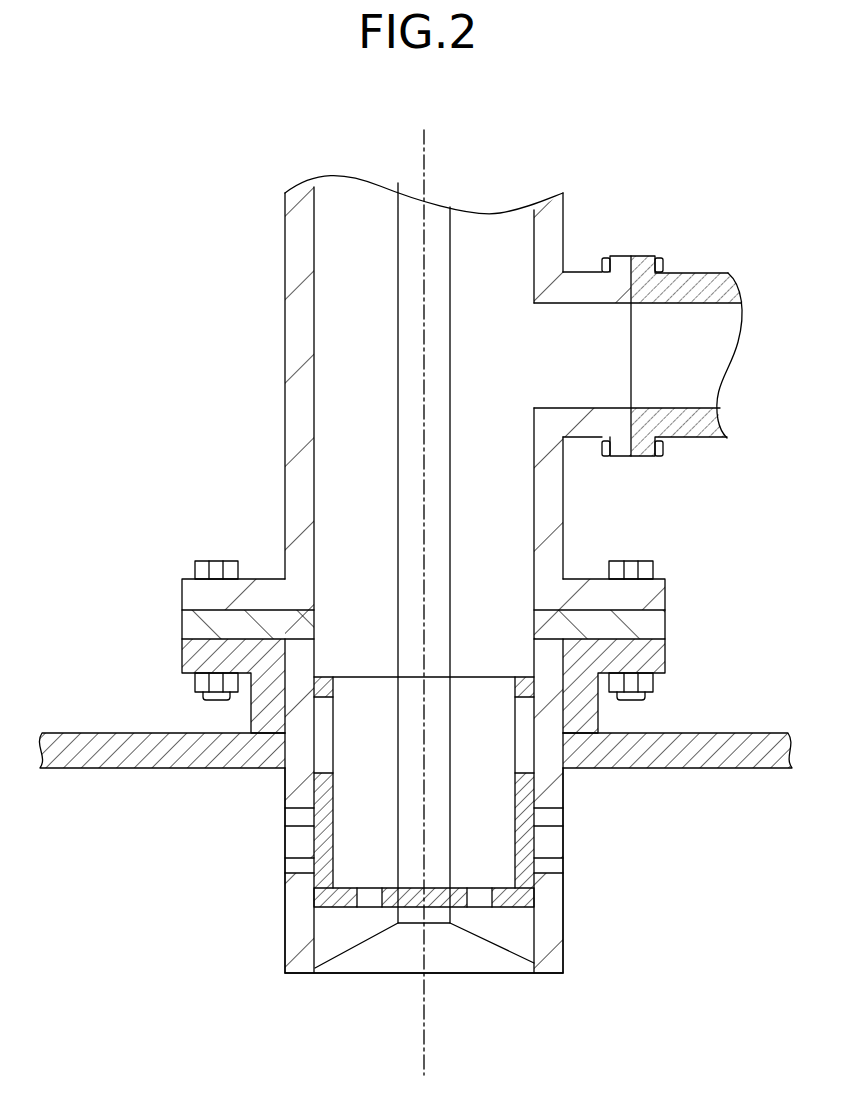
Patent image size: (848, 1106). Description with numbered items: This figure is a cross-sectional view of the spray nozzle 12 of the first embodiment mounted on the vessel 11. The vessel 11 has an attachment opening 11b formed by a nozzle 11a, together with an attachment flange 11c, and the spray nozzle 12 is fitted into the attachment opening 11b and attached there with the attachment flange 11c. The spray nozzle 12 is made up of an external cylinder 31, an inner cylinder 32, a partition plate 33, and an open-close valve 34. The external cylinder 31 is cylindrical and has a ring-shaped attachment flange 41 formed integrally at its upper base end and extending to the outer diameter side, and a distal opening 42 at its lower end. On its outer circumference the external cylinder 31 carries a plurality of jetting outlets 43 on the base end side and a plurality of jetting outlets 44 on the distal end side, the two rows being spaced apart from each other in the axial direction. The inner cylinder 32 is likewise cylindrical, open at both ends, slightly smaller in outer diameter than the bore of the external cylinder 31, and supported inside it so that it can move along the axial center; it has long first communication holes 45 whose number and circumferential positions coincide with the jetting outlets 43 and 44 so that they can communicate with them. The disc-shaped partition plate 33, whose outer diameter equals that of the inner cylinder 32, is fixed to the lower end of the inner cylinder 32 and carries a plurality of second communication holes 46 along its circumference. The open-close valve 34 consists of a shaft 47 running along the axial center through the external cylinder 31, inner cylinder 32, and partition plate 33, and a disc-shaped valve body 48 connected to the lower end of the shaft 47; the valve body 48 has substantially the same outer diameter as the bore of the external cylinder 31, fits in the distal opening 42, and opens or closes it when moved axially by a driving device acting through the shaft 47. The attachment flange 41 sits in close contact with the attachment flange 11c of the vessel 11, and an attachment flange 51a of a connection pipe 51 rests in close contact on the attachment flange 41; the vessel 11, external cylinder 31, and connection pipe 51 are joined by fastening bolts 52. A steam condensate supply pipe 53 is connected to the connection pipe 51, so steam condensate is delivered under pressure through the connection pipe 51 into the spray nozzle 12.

The vessel 11 is at (68, 735).
The nozzle 11a is at (258, 712).
The attachment opening 11b is at (566, 735).
The attachment flange 11c is at (661, 653).
The spray nozzle 12 is at (203, 445).
The external cylinder 31 is at (564, 946).
The inner cylinder 32 is at (537, 838).
The partition plate 33 is at (500, 906).
The open-close valve 34 is at (356, 974).
The attachment flange 41 is at (190, 622).
The distal opening 42 is at (325, 951).
The jetting outlets 43 is at (290, 815).
The jetting outlets 44 is at (290, 863).
The first communication holes 45 is at (293, 769).
The second communication holes 46 is at (366, 897).
The shaft 47 is at (412, 418).
The valve body 48 is at (401, 975).
The connection pipe 51 is at (284, 286).
The attachment flange 51a is at (184, 593).
The fastening bolts 52 is at (656, 574).
The steam condensate supply pipe 53 is at (699, 436).